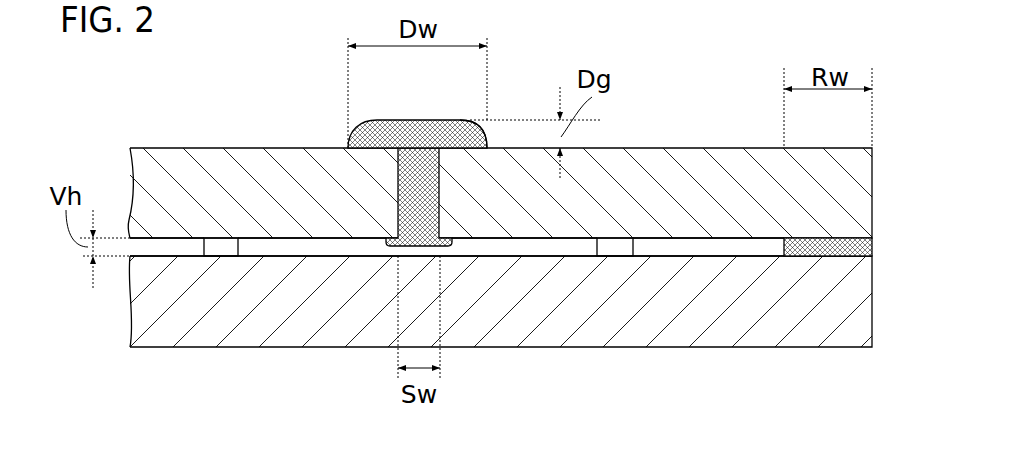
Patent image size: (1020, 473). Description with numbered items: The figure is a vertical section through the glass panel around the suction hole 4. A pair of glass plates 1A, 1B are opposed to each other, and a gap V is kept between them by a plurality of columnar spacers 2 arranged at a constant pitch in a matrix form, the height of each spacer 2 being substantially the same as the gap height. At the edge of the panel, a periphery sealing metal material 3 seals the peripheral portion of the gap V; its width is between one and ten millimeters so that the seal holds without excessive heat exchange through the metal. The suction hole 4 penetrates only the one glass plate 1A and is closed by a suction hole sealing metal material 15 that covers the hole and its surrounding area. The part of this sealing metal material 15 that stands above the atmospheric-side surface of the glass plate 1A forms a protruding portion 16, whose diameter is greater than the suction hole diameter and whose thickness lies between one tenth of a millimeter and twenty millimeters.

The glass plate 1A is at (693, 168).
The glass plate 1B is at (617, 338).
The columnar spacer 2 is at (222, 240).
The periphery sealing metal material 3 is at (817, 250).
The suction hole 4 is at (423, 248).
The suction hole sealing metal material 15 is at (418, 119).
The protruding portion 16 is at (488, 133).
The gap V is at (301, 247).